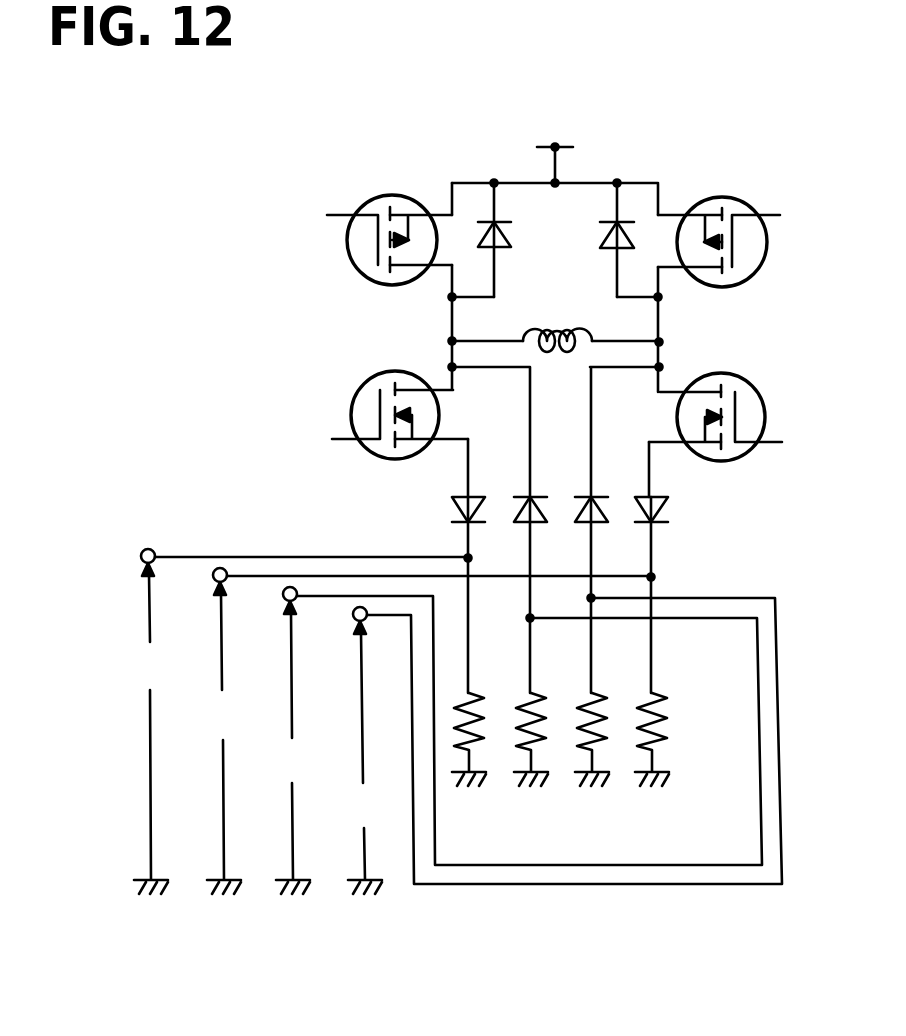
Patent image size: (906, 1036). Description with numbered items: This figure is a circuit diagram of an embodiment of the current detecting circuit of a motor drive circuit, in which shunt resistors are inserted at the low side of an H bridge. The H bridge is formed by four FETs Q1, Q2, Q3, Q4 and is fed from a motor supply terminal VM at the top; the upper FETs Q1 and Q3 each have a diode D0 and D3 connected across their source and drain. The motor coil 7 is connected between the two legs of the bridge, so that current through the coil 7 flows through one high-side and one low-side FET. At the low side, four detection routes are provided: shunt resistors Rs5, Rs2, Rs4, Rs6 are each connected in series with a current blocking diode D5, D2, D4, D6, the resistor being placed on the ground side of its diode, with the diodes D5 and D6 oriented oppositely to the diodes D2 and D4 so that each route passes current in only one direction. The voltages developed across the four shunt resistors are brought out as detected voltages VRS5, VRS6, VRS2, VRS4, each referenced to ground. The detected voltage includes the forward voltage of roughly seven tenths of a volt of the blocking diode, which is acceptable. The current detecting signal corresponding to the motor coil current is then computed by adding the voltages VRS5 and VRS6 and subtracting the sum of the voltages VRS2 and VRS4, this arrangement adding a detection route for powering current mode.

The motor power supply voltage terminal VM is at (550, 140).
The FET Q1 is at (375, 241).
The FET Q2 is at (384, 415).
The FET Q3 is at (736, 242).
The FET Q4 is at (734, 418).
The diode D0 is at (514, 236).
The diode D3 is at (608, 254).
The motor coil 7 is at (563, 352).
The current blocking diode D5 is at (485, 595).
The current blocking diode D2 is at (546, 595).
The current blocking diode D4 is at (607, 595).
The current blocking diode D6 is at (667, 595).
The shunt resistor Rs5 is at (477, 744).
The shunt resistor Rs2 is at (538, 745).
The shunt resistor Rs4 is at (600, 745).
The shunt resistor Rs6 is at (660, 745).
The detected voltage across shunt resistor Rs5 VRS5 is at (290, 721).
The detected voltage across shunt resistor Rs6 VRS6 is at (416, 731).
The detected voltage across shunt resistor Rs2 VRS2 is at (509, 740).
The detected voltage across shunt resistor Rs4 VRS4 is at (556, 746).